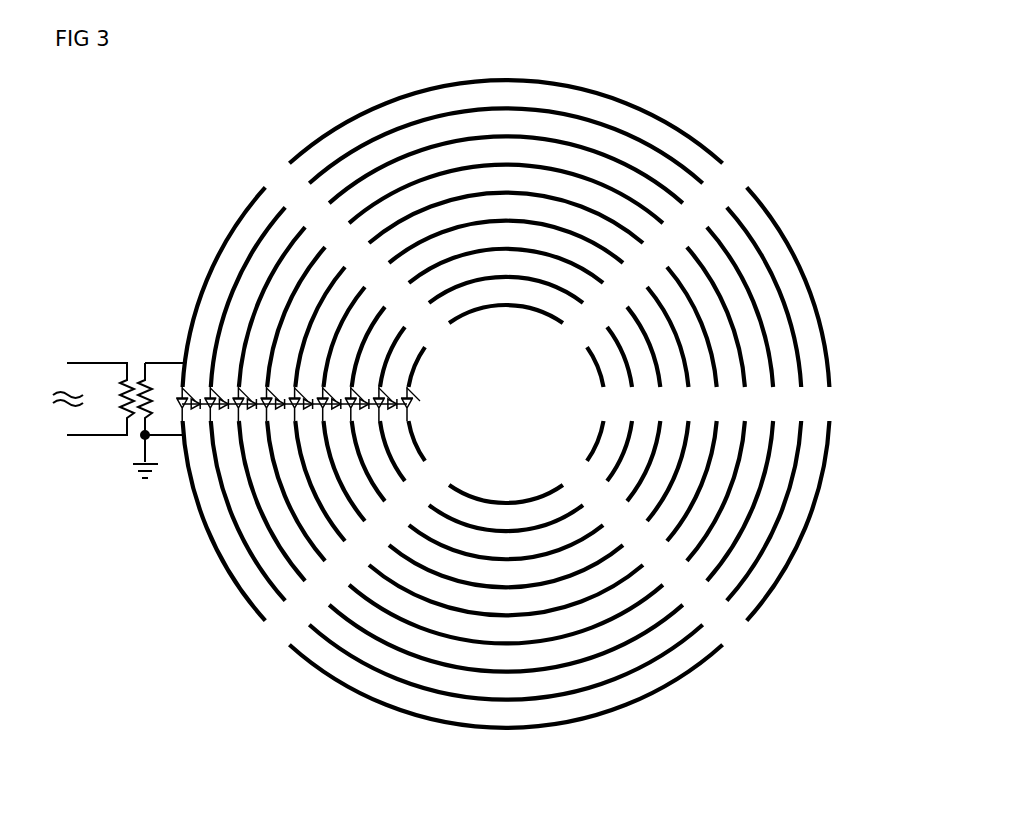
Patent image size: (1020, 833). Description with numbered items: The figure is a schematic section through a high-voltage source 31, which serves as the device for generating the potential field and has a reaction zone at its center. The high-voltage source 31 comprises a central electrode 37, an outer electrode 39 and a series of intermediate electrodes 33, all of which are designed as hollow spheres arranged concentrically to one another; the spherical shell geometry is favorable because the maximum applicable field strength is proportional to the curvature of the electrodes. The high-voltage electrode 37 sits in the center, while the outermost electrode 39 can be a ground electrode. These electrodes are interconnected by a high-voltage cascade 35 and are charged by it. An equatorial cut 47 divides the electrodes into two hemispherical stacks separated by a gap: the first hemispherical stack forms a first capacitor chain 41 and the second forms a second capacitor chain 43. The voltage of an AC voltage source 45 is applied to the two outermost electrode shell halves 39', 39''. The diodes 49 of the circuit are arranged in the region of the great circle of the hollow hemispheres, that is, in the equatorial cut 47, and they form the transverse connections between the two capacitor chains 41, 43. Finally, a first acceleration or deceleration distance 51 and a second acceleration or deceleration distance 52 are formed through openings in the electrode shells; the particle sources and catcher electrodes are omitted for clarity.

The high-voltage source 31 is at (205, 662).
The intermediate electrodes 33 is at (573, 198).
The high-voltage cascade 35 is at (255, 380).
The central electrode 37 is at (506, 306).
The outer electrode 39 is at (478, 379).
The outermost electrode shell half 39' is at (224, 275).
The outermost electrode shell half 39'' is at (196, 521).
The first capacitor chain 41 is at (826, 238).
The second capacitor chain 43 is at (812, 596).
The AC voltage source 45 is at (135, 374).
The equatorial cut 47 is at (826, 404).
The diodes 49 is at (318, 423).
The first acceleration or deceleration distance 51 is at (735, 166).
The second acceleration or deceleration distance 52 is at (730, 632).